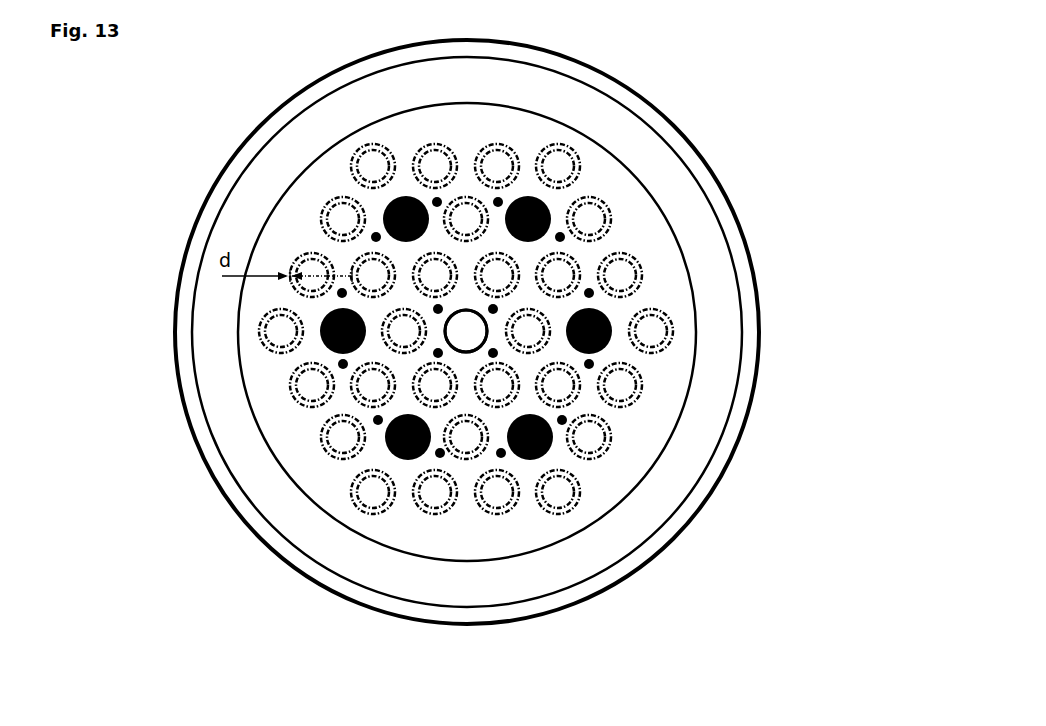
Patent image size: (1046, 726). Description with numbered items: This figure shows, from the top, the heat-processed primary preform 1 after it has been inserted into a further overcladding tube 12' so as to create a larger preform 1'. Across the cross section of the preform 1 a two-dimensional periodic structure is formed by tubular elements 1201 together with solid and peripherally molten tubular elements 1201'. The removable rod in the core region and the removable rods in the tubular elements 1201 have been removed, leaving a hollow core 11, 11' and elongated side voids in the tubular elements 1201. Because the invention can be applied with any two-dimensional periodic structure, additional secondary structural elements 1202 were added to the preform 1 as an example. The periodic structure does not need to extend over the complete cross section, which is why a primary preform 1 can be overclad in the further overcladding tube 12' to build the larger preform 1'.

The preform 1 is at (467, 298).
The larger preform 1' is at (470, 332).
The further overcladding tube 12' is at (504, 321).
The central core 11 is at (368, 186).
The central core (alternative) 11' is at (392, 201).
The tubular elements 1201 is at (547, 332).
The solid and peripherally molten tubular elements 1201' is at (364, 380).
The secondary structural elements 1202 is at (503, 454).